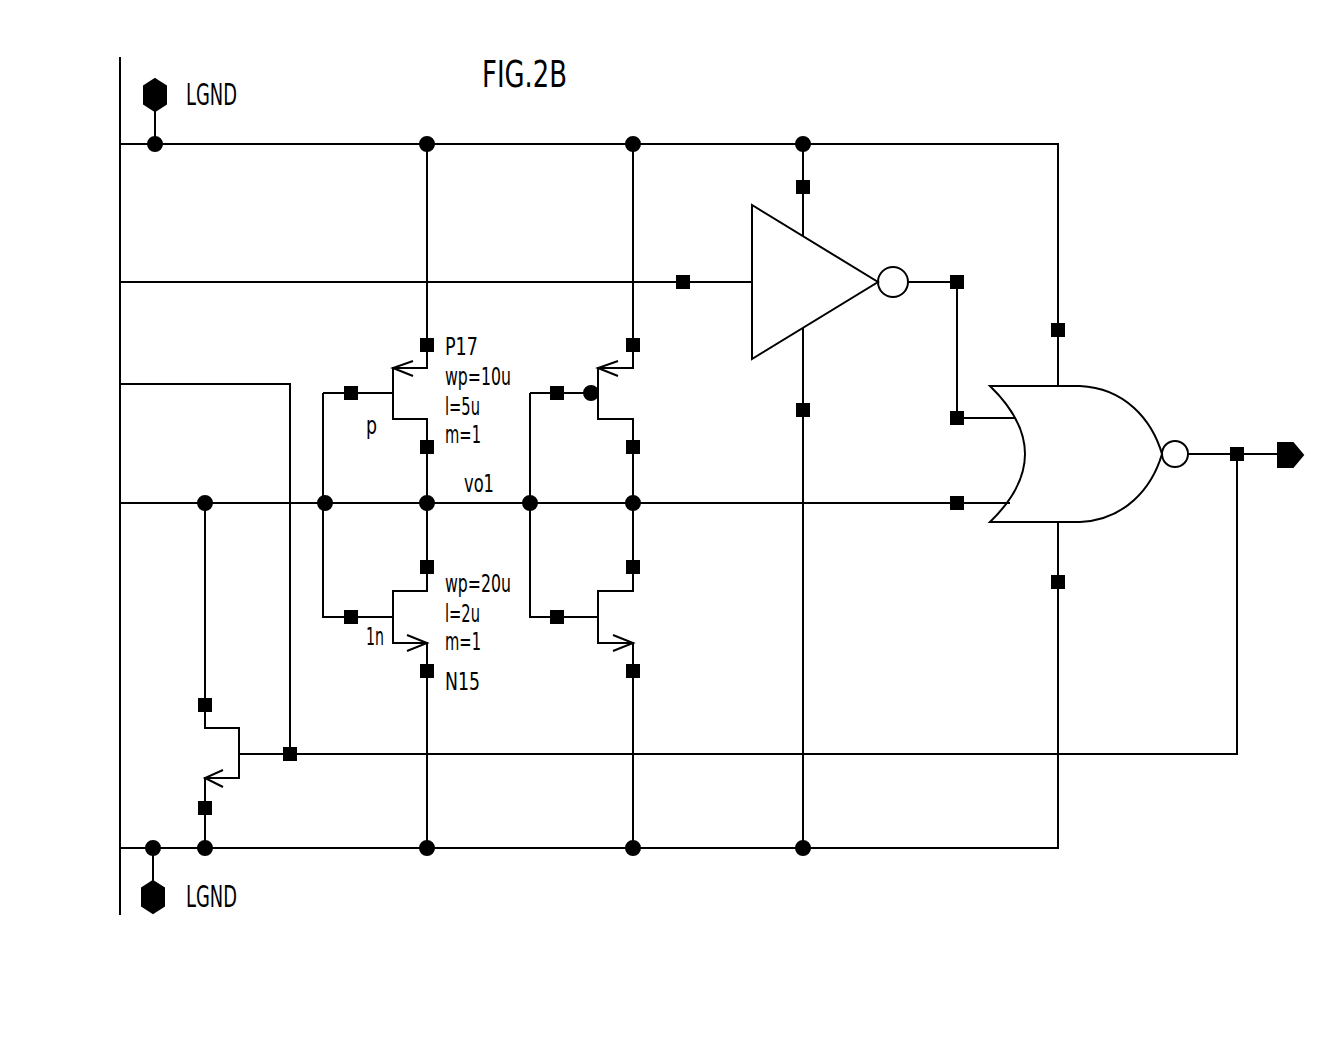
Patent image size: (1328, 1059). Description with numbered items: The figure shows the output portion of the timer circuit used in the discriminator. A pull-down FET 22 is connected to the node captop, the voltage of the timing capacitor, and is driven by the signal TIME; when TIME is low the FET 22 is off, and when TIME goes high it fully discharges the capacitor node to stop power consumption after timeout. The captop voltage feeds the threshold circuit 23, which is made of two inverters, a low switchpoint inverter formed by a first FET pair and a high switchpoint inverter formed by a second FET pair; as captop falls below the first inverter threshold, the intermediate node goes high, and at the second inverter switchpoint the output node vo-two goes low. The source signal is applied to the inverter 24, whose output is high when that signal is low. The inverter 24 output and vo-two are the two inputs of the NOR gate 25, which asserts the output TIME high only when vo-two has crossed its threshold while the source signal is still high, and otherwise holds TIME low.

The FET Mpulln 22 is at (257, 793).
The threshold circuit 23 is at (692, 650).
The inverter 24 is at (832, 249).
The NOR gate 25 is at (1135, 404).